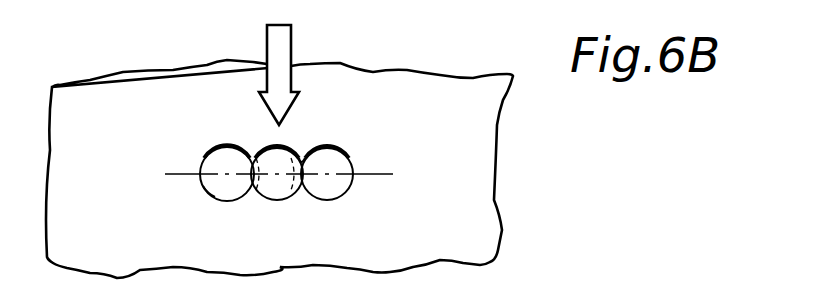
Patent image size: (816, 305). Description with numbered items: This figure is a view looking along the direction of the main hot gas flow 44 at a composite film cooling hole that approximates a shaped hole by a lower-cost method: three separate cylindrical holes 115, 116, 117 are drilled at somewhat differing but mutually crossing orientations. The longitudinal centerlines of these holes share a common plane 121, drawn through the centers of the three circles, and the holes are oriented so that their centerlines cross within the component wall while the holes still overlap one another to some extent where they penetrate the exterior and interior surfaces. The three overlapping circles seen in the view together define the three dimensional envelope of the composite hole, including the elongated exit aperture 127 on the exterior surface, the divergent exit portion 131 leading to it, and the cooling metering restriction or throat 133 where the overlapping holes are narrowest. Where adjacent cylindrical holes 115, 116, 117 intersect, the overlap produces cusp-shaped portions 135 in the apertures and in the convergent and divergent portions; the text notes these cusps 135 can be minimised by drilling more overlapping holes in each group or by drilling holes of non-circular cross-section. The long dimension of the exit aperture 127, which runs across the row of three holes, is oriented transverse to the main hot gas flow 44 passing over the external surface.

The main hot gas flow 44 is at (279, 54).
The common plane 121 is at (382, 173).
The cylindrical hole 117 is at (227, 200).
The cylindrical hole 115 is at (278, 200).
The cylindrical hole 116 is at (323, 201).
The exit aperture 127 is at (203, 160).
The cusp-shaped portions 135 is at (302, 155).
The throat 133 is at (306, 162).
The divergent exit portion 131 is at (214, 188).